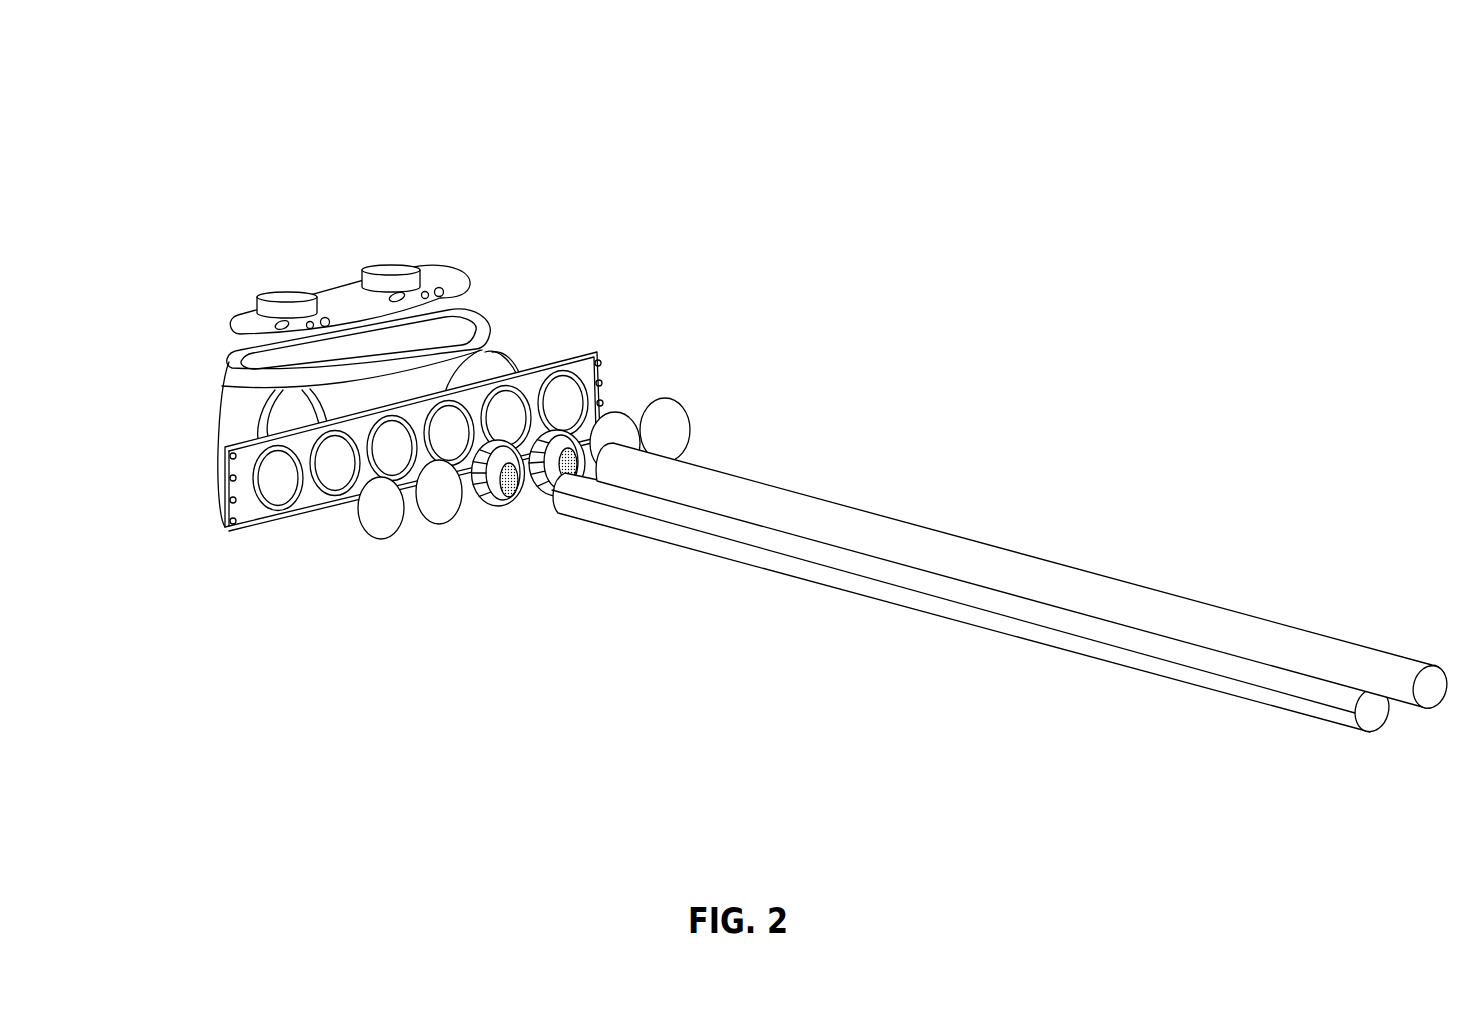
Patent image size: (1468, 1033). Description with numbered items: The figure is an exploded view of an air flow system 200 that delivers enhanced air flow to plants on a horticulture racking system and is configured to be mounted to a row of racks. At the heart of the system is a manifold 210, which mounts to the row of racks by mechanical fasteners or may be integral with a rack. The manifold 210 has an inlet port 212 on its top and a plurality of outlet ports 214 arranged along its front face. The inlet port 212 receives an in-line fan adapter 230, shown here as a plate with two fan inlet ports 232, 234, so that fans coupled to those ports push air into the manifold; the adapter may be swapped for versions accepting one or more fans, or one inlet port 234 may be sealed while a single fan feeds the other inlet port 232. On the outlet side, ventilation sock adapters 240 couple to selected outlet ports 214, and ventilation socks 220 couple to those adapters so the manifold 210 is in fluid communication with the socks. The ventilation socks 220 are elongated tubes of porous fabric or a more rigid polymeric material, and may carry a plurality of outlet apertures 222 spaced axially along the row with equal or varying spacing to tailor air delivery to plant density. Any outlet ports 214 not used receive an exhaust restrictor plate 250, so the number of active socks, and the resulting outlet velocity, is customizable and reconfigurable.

The air flow system 200 is at (770, 424).
The manifold 210 is at (242, 411).
The inlet port 212 is at (258, 362).
The outlet ports 214 is at (283, 486).
The ventilation socks 220 is at (1051, 630).
The outlet apertures 222 is at (1286, 708).
The in-line fan adapter 230 is at (345, 288).
The inlet port 232 is at (298, 298).
The inlet port 234 is at (388, 282).
The ventilation sock adapter 240 is at (498, 497).
The exhaust restrictor plate 250 is at (385, 505).